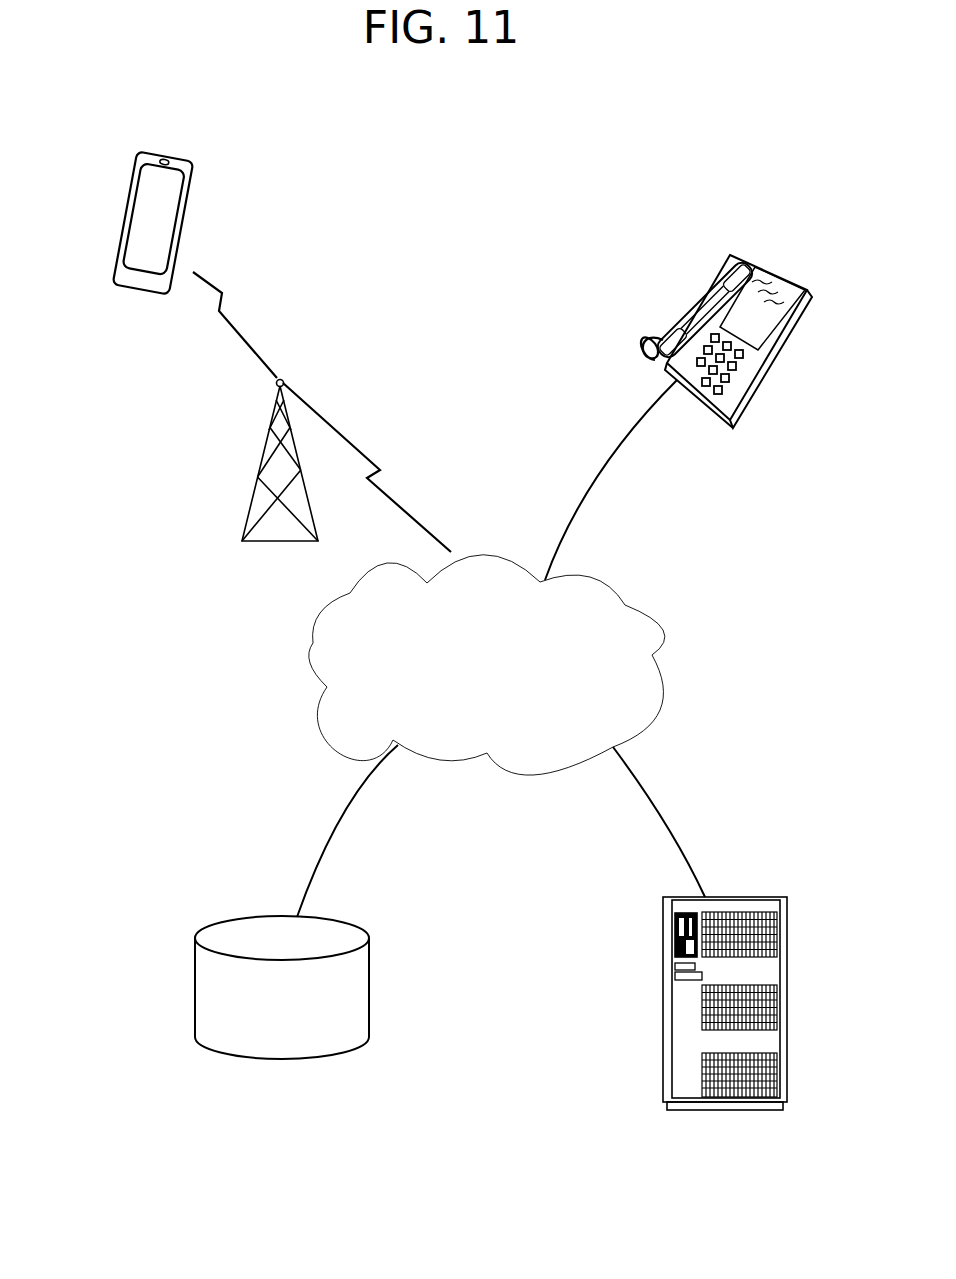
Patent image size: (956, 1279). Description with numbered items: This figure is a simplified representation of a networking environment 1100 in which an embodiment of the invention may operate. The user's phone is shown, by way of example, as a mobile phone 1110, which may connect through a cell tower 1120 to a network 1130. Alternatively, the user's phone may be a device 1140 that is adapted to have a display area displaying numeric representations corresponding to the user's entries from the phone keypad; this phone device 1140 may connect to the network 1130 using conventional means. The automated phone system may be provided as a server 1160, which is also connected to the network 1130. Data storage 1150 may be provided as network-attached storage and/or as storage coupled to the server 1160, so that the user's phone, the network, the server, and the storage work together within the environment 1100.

The networking environment 1100 is at (477, 186).
The mobile phone 1110 is at (112, 170).
The cell tower 1120 is at (262, 452).
The network 1130 is at (633, 605).
The device 1140 is at (807, 290).
The data storage 1150 is at (257, 917).
The server 1160 is at (748, 897).